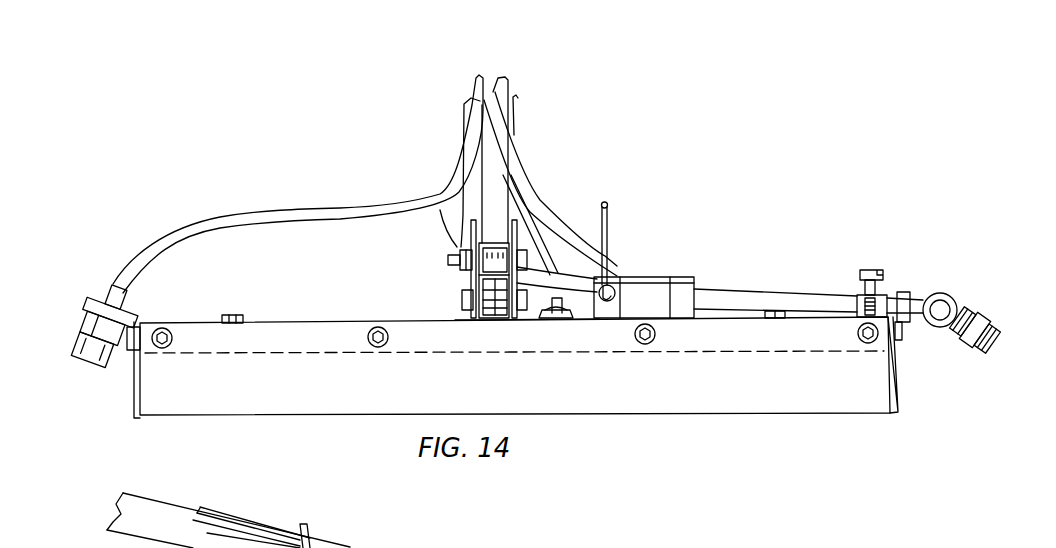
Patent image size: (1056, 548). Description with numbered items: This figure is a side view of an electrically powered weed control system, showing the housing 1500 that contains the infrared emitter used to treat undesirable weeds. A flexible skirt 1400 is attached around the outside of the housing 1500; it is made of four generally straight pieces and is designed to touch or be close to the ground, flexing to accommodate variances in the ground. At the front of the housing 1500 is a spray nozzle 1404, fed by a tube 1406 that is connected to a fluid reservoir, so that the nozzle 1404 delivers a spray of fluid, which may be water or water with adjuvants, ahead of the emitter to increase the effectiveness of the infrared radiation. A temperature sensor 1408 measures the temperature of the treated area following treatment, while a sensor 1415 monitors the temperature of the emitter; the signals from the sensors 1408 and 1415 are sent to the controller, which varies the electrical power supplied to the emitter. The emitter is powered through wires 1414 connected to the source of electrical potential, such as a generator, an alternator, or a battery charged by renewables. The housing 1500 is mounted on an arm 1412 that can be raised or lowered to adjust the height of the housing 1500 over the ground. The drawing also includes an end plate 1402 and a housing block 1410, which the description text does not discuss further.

The flexible skirt 1400 is at (725, 383).
The end plate 1402 is at (896, 382).
The spray nozzle 1404 is at (962, 312).
The tube 1406 is at (762, 302).
The temperature sensor 1408 is at (106, 300).
The housing block 1410 is at (647, 276).
The arm 1412 is at (491, 195).
The wires 1414 is at (540, 203).
The sensor 1415 is at (534, 233).
The housing 1500 is at (359, 300).